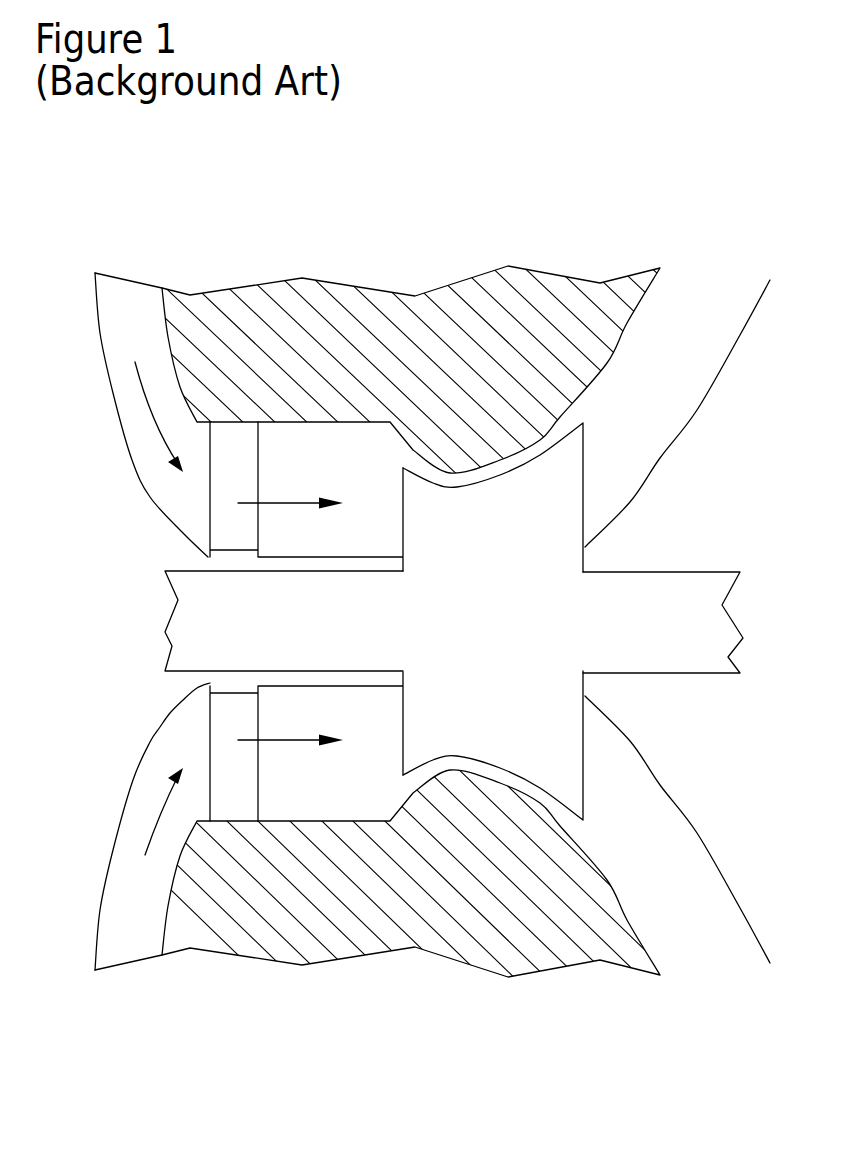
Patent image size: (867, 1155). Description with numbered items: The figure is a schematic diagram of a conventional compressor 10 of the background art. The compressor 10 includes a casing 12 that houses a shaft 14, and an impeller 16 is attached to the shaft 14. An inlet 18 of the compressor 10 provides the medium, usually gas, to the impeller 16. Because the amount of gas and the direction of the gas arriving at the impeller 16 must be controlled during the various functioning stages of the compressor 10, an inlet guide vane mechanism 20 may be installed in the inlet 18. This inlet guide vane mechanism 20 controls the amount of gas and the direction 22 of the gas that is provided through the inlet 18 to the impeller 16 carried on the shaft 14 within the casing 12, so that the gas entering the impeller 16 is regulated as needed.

The compressor 10 is at (463, 223).
The casing 12 is at (536, 332).
The shaft 14 is at (685, 598).
The impeller 16 is at (508, 723).
The inlet 18 is at (129, 312).
The inlet guide vane (IGV) mechanism 20 is at (230, 772).
The direction of the gas 22 is at (160, 420).